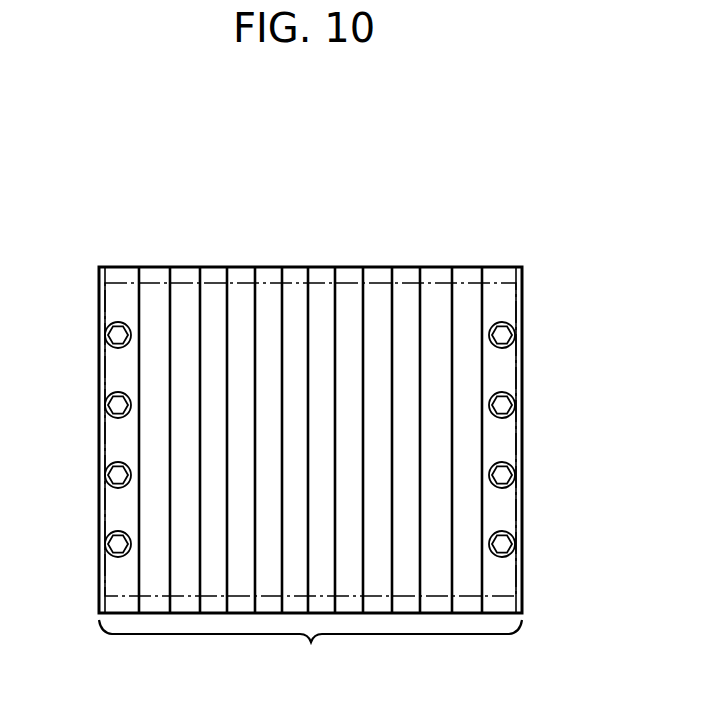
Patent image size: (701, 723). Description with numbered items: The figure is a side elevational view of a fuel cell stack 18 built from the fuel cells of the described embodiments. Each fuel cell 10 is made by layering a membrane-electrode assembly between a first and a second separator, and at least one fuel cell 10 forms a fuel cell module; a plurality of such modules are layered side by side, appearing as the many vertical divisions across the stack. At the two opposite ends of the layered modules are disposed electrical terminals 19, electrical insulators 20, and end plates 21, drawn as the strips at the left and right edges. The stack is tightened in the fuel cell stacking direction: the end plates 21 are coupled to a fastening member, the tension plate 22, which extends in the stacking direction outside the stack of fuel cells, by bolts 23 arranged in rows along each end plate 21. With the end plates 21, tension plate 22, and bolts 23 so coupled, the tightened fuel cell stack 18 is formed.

The fuel cell 10 is at (213, 277).
The fuel cell stack 18 is at (310, 476).
The electrical terminal 19 is at (182, 277).
The electrical insulator 20 is at (152, 275).
The end plate 21 is at (103, 277).
The tension plate 22 is at (102, 378).
The bolt 23 is at (116, 337).